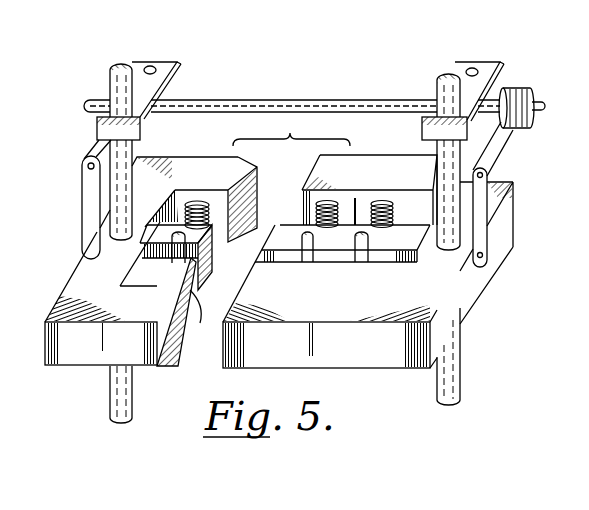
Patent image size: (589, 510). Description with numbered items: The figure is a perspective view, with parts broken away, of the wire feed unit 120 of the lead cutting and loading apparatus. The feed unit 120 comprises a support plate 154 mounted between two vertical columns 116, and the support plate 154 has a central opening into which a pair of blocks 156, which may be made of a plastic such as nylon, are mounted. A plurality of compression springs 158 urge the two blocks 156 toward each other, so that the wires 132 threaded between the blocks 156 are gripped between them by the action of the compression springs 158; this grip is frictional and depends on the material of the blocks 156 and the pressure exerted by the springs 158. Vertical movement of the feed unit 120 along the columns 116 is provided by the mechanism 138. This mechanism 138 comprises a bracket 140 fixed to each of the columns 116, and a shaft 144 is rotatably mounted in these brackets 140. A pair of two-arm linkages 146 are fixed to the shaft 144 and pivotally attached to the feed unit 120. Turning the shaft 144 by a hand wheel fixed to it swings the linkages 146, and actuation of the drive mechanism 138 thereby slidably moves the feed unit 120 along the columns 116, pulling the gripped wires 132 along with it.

The column 116 is at (110, 400).
The feed unit 120 is at (80, 258).
The wire 132 is at (180, 252).
The mechanism 138 is at (82, 167).
The bracket 140 is at (177, 66).
The shaft 144 is at (343, 100).
The two-arm linkage 146 is at (82, 190).
The support plate 154 is at (66, 290).
The block 156 is at (270, 262).
The compression spring 158 is at (207, 205).